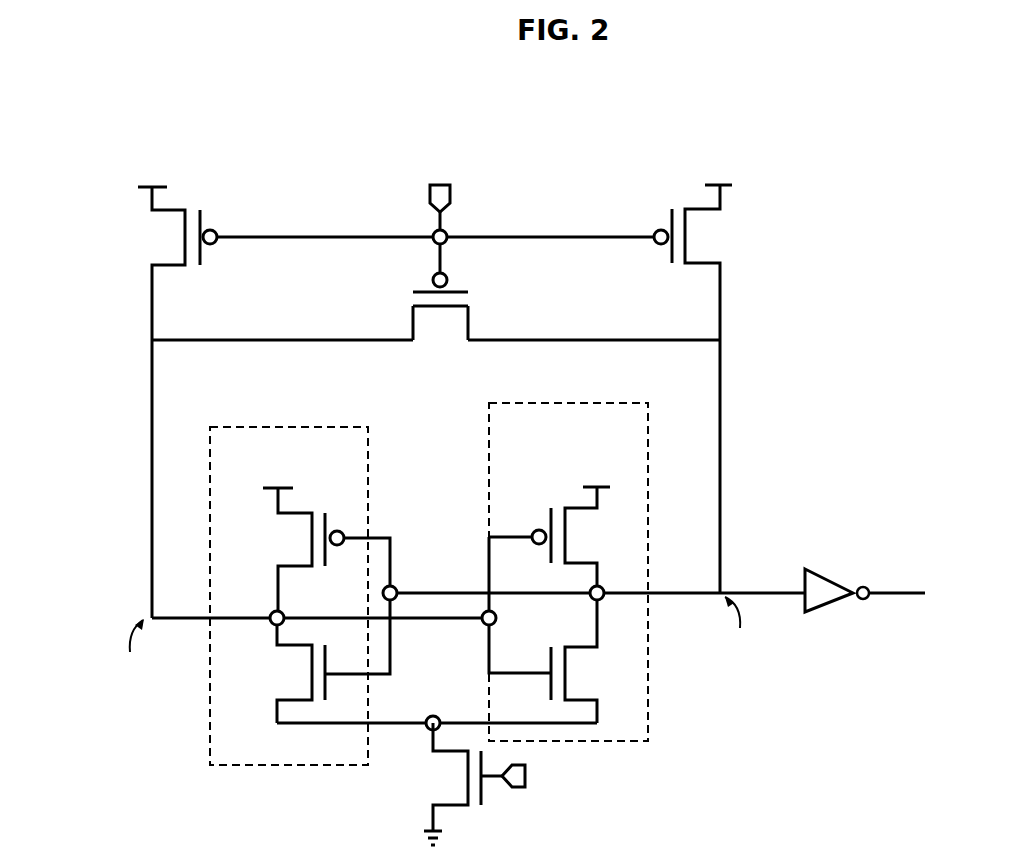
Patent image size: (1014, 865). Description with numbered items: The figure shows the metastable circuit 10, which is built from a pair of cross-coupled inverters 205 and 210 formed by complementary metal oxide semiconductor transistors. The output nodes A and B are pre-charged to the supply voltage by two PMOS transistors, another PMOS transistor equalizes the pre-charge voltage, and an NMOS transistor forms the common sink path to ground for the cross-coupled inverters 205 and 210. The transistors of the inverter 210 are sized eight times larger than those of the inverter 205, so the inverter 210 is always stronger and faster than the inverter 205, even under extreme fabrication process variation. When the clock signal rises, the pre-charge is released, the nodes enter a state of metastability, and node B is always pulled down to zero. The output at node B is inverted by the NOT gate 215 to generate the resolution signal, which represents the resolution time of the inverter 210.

The metastable circuit 10 is at (432, 68).
The inverter 205 is at (242, 768).
The inverter 210 is at (648, 726).
The NOT gate 215 is at (818, 568).